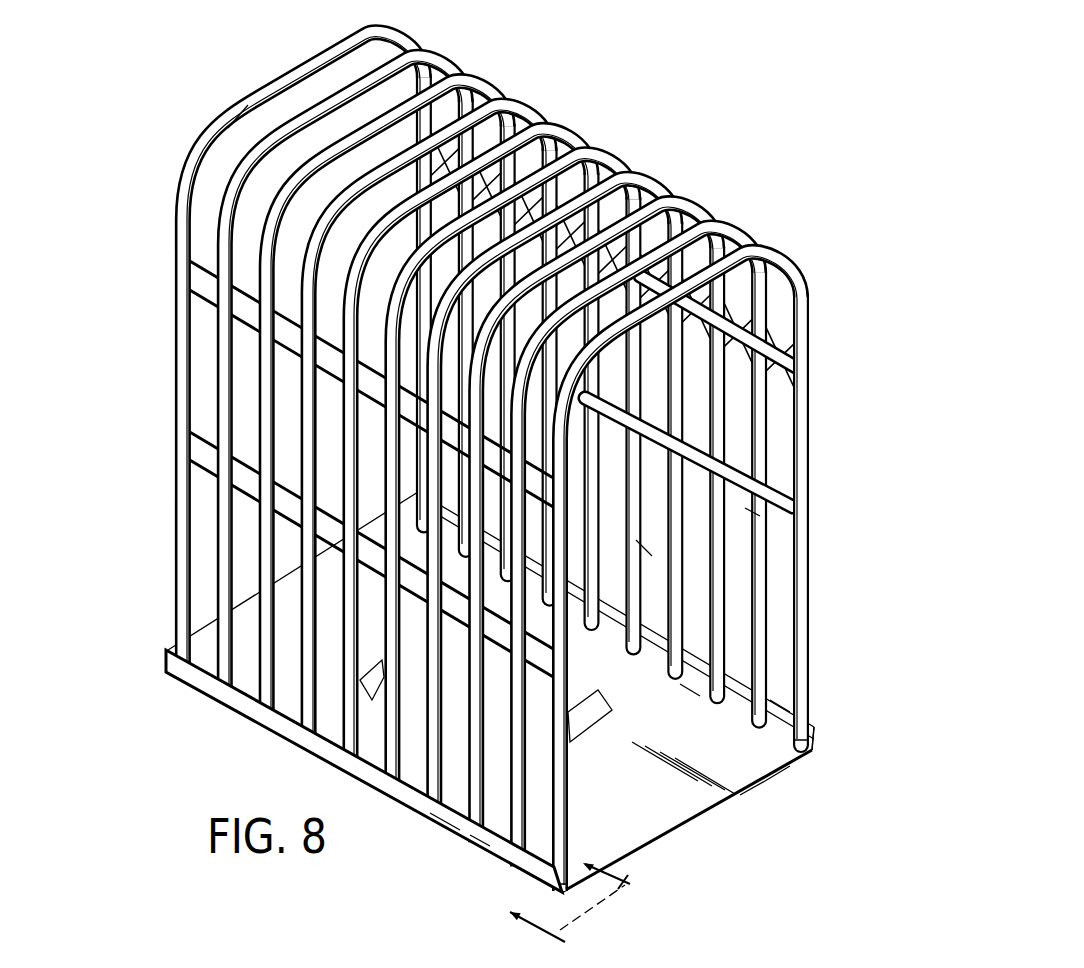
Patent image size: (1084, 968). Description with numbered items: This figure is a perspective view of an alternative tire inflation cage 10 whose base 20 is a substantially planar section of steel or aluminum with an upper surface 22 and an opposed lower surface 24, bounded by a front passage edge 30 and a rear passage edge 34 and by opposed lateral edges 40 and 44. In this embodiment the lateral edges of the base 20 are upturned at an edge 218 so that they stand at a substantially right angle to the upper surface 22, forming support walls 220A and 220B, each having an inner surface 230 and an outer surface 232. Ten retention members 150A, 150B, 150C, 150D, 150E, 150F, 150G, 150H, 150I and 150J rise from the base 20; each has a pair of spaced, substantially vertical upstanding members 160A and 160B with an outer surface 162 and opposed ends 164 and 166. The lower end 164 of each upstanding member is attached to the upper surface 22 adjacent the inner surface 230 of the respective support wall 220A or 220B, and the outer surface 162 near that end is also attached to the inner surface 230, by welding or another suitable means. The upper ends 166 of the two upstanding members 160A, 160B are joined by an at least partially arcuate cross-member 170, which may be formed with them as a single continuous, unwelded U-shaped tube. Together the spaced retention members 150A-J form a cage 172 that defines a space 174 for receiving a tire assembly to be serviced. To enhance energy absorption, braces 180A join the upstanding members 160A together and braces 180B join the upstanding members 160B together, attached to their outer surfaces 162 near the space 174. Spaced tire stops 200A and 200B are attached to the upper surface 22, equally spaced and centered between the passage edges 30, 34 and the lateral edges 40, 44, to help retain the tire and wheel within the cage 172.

The tire inflation cage 10 is at (160, 133).
The base 20 is at (667, 841).
The upper surface 22 is at (628, 803).
The lower surface 24 is at (753, 787).
The front passage edge 30 is at (777, 770).
The rear passage edge 34 is at (205, 648).
The lateral edge 40 is at (328, 742).
The lateral edge 44 is at (813, 727).
The retention member 150A is at (783, 260).
The retention member 150B is at (723, 227).
The retention member 150C is at (687, 207).
The retention member 150D is at (653, 187).
The retention member 150E is at (628, 158).
The retention member 150F is at (560, 133).
The retention member 150G is at (527, 110).
The retention member 150H is at (483, 88).
The retention member 150I is at (447, 67).
The retention member 150J is at (365, 27).
The upstanding member 160A is at (177, 527).
The upstanding member 160B is at (808, 585).
The outer surface 162 is at (805, 530).
The end 164 is at (807, 753).
The end 166 is at (177, 217).
The cross-member 170 is at (283, 85).
The cage 172 is at (607, 167).
The space 174 is at (645, 548).
The brace 180A is at (200, 450).
The brace 180B is at (768, 505).
The tire stop 200A is at (607, 707).
The tire stop 200B is at (417, 665).
The edge 218 is at (478, 838).
The support wall 220A is at (445, 840).
The support wall 220B is at (780, 710).
The inner surface 230 is at (690, 690).
The outer surface 232 is at (233, 697).